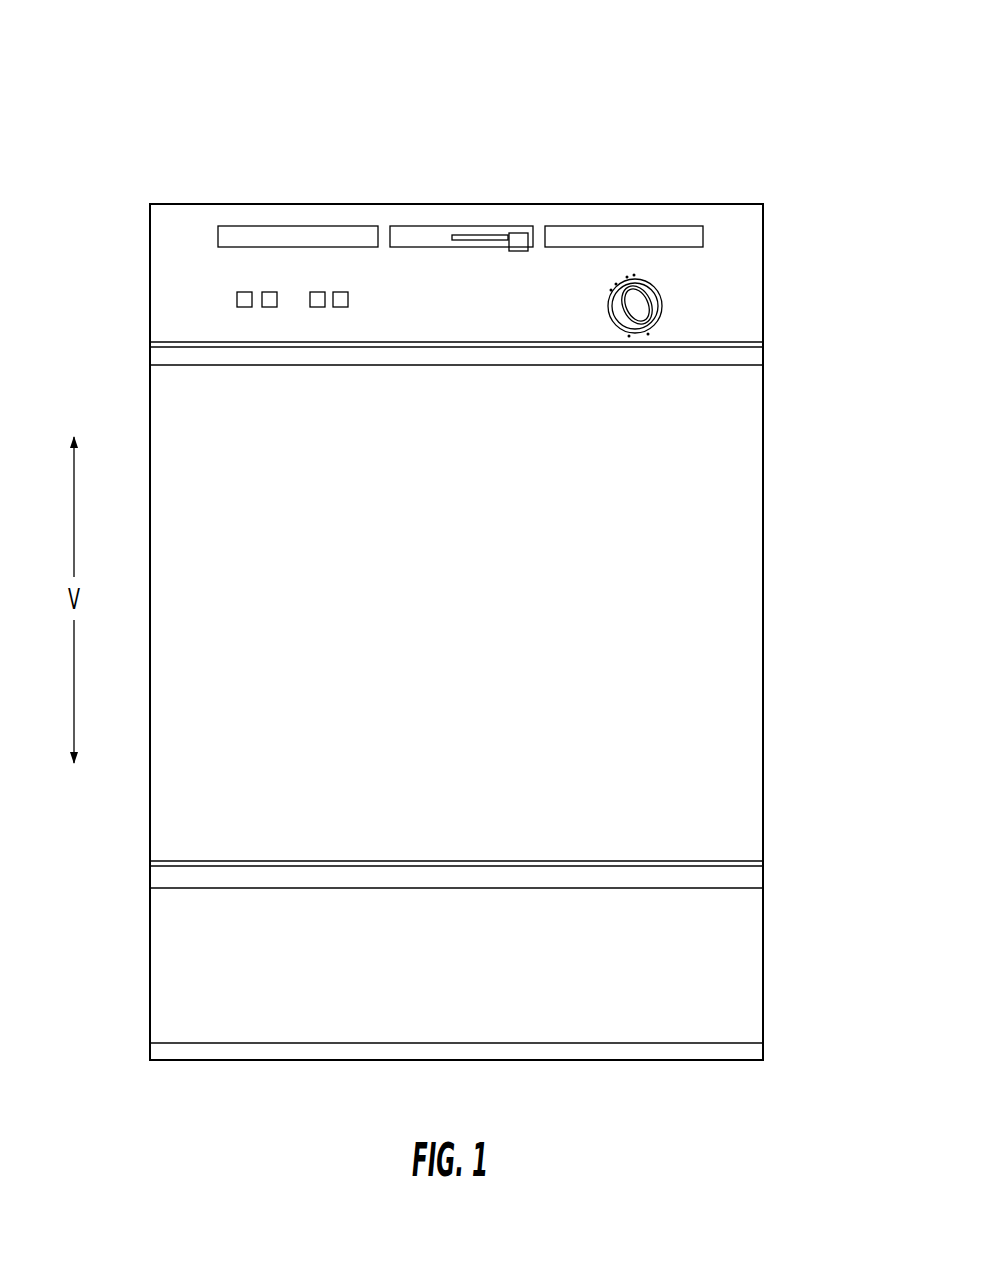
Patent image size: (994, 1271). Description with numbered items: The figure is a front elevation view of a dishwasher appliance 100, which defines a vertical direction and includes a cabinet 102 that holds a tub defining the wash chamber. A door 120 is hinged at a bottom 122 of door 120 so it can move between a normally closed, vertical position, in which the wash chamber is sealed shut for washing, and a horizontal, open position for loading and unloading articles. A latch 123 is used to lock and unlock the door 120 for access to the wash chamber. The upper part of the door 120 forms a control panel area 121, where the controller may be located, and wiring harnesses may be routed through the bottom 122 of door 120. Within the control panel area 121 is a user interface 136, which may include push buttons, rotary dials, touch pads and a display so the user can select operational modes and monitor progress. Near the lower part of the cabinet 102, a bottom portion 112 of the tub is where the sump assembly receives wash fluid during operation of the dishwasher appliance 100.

The dishwasher appliance 100 is at (694, 50).
The cabinet 102 is at (776, 957).
The bottom portion 112 is at (141, 1052).
The door 120 is at (722, 590).
The control panel area 121 is at (740, 228).
The bottom of door 122 is at (776, 851).
The latch 123 is at (518, 233).
The user interface 136 is at (318, 292).